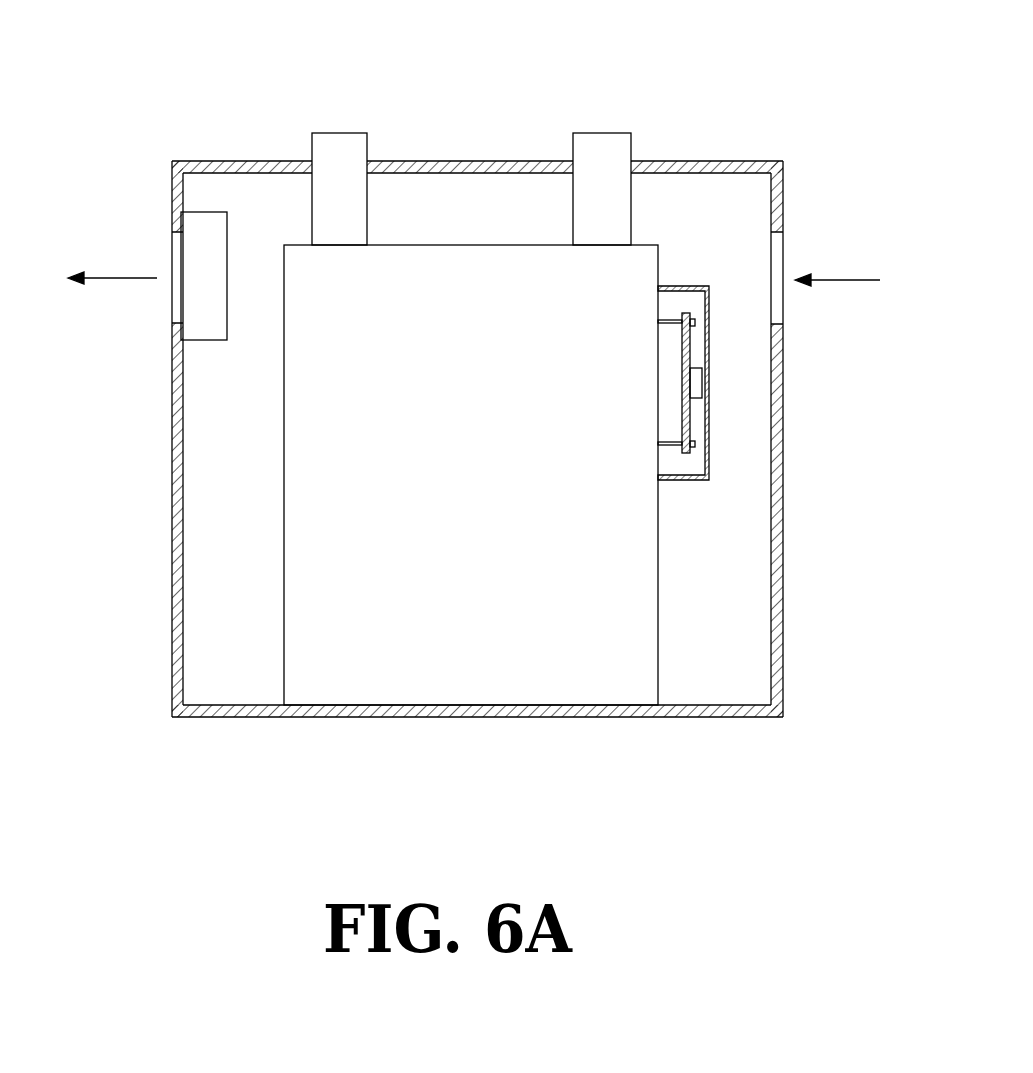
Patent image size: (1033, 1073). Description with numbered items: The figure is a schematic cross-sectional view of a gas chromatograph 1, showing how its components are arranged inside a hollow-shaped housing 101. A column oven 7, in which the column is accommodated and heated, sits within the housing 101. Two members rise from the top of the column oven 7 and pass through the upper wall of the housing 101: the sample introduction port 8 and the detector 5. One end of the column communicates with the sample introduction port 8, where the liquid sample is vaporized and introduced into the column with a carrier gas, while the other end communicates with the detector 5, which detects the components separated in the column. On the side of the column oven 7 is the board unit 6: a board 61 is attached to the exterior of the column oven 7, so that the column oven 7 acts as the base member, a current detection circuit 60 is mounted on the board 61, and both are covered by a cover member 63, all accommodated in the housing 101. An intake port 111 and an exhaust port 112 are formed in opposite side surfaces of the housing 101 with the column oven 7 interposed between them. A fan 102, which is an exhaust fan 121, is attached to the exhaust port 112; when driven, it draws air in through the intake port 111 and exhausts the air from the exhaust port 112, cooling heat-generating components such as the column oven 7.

The gas chromatograph 1 is at (477, 110).
The detector 5 is at (631, 143).
The sample introduction port 8 is at (312, 143).
The board unit 6 is at (726, 401).
The current detection circuit 60 is at (700, 378).
The board 61 is at (686, 428).
The cover member 63 is at (688, 480).
The column oven 7 is at (342, 685).
The housing 101 is at (500, 717).
The fan 102 is at (197, 333).
The exhaust fan 121 is at (148, 354).
The intake port 111 is at (778, 243).
The exhaust port 112 is at (176, 243).